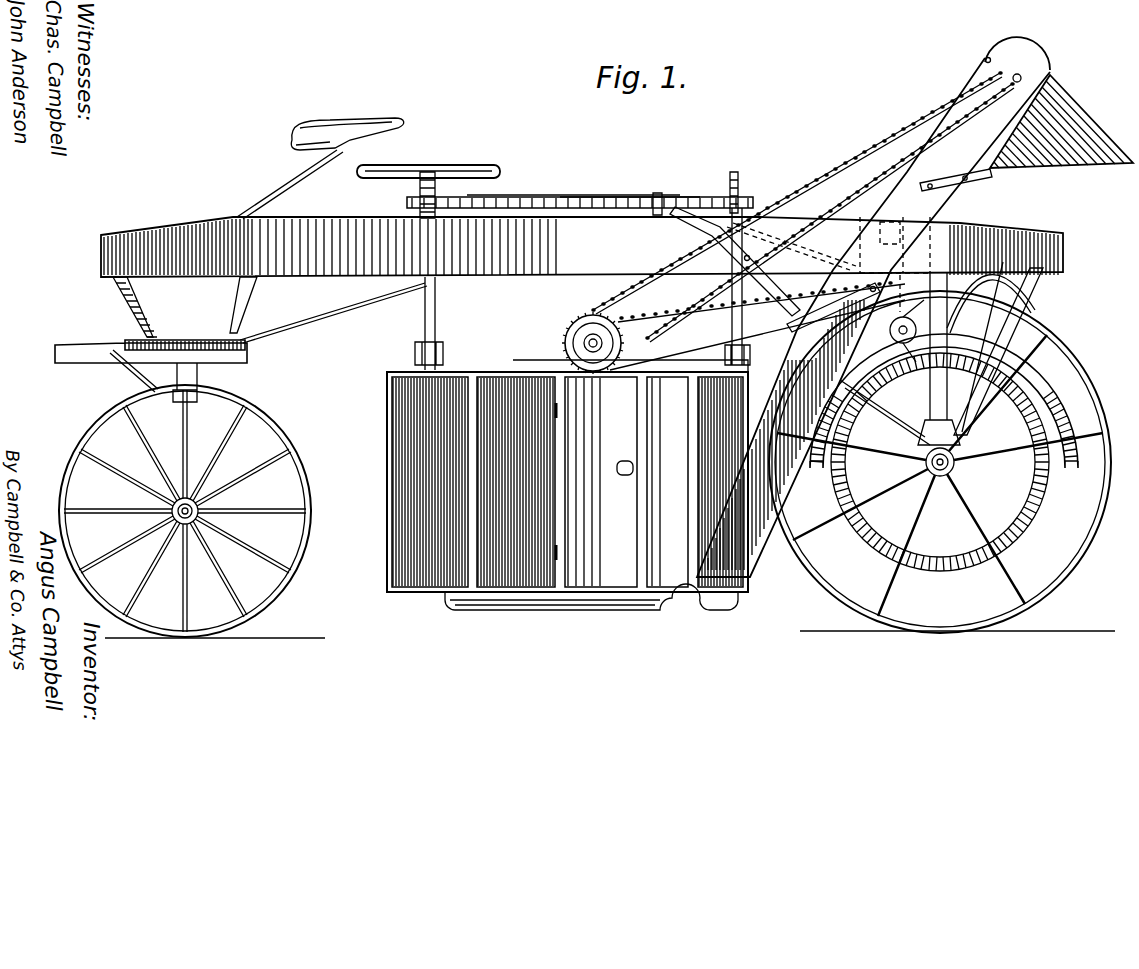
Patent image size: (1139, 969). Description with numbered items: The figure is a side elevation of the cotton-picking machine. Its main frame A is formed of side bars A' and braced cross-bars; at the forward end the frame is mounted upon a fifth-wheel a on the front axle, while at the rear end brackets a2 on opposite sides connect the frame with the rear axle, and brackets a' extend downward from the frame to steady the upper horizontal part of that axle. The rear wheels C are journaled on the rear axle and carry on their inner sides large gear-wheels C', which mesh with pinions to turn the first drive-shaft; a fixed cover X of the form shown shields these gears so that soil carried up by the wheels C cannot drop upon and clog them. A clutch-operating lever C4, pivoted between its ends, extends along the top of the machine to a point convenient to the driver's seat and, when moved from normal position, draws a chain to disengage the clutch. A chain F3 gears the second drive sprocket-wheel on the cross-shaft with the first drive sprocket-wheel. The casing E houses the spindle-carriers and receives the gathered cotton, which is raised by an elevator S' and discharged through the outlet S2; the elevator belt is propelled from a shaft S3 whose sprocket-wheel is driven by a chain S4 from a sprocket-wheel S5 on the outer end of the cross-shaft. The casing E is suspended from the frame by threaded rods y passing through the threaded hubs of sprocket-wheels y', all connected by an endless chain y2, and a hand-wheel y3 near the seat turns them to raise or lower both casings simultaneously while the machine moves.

The main frame A is at (630, 179).
The side bars A' is at (582, 247).
The fifth-wheel a is at (151, 337).
The brackets a' is at (991, 304).
The brackets a2 is at (1020, 312).
The rear wheels C is at (940, 462).
The gear-wheels C' is at (959, 435).
The clutch-operating lever C4 is at (563, 197).
The casing E is at (387, 455).
The chain F3 is at (667, 312).
The elevator S' is at (873, 317).
The outlet S2 is at (1090, 160).
The shaft S3 is at (1021, 77).
The chain S4 is at (803, 207).
The sprocket-wheel S5 is at (568, 336).
The cover X is at (944, 401).
The rods y is at (568, 289).
The sprocket-wheels y' is at (570, 194).
The endless chain y2 is at (662, 196).
The hand-wheel y3 is at (478, 165).